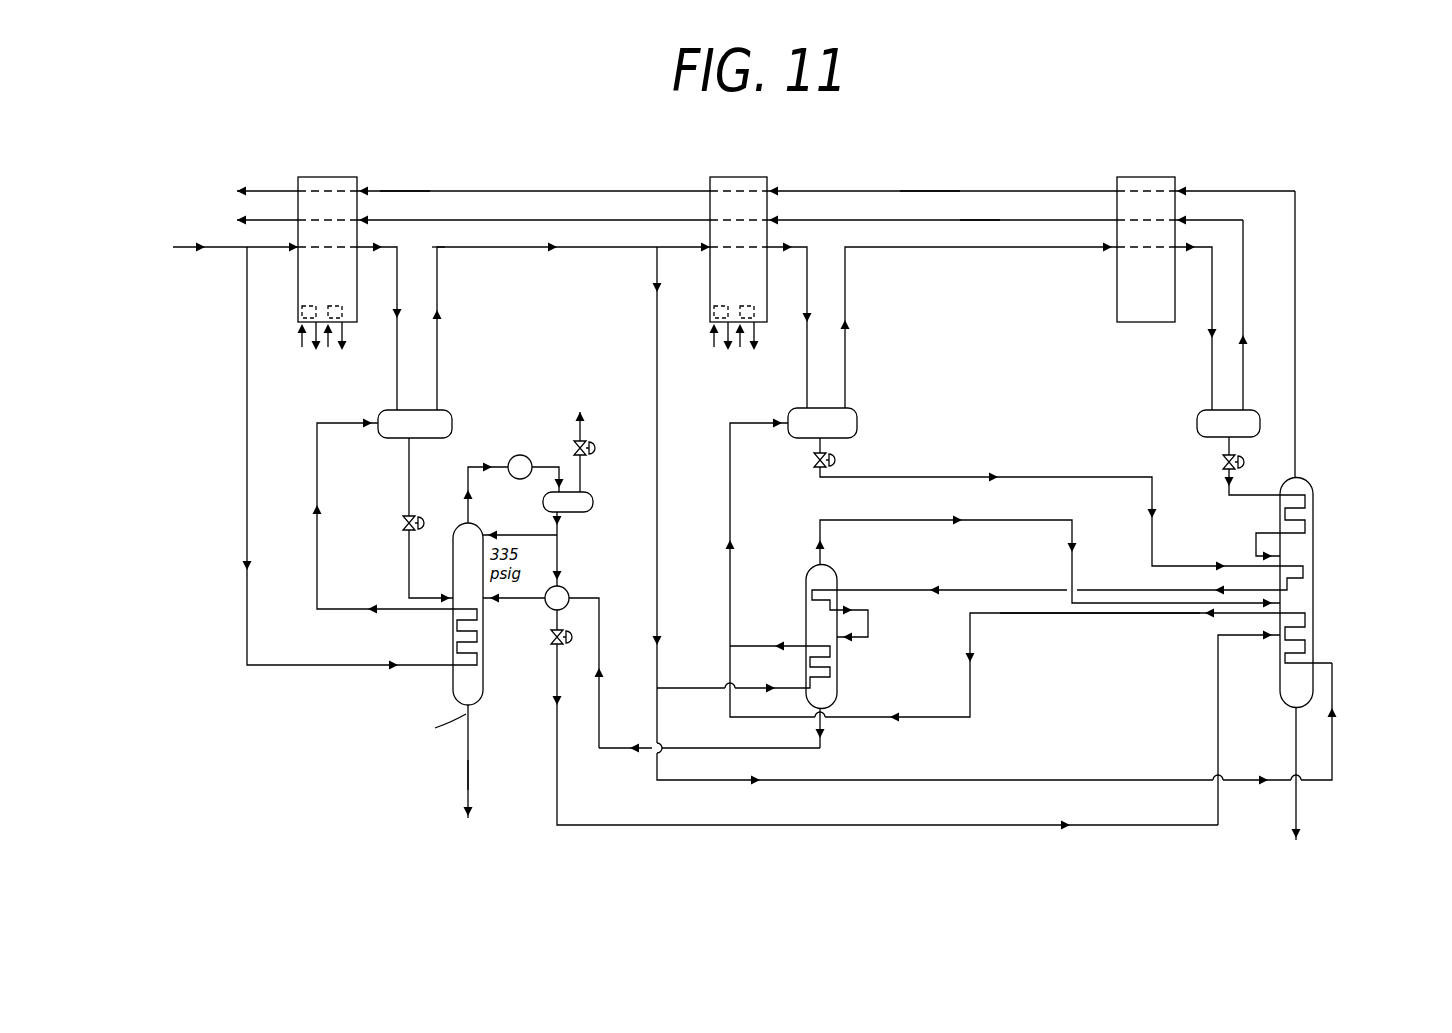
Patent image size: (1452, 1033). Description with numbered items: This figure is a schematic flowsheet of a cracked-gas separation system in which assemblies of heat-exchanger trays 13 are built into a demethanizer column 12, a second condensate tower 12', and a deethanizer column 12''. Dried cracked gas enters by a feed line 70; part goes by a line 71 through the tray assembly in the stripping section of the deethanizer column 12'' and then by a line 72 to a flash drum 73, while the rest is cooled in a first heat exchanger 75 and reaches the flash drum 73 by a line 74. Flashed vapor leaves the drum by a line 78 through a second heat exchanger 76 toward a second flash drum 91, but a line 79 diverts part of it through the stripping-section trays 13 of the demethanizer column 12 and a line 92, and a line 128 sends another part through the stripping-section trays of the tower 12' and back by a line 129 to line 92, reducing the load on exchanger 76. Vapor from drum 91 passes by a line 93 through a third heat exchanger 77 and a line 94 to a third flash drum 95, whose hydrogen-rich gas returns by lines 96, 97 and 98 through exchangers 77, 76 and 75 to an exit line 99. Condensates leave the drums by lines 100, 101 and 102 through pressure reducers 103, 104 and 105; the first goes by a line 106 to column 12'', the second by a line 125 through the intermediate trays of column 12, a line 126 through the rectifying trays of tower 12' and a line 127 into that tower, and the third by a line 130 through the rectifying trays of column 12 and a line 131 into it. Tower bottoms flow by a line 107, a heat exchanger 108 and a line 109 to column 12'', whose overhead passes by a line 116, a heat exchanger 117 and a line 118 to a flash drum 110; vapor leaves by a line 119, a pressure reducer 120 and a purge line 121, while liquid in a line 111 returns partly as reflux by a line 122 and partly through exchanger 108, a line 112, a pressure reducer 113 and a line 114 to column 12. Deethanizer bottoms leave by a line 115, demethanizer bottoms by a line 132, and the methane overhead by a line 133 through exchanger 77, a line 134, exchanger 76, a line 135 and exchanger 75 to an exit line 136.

The demethanizer column 12 is at (1322, 673).
The second condensate tower 12' is at (848, 643).
The deethanizer column 12'' is at (376, 663).
The heat-exchanger trays 13 is at (456, 630).
The feed line 70 is at (190, 252).
The line 71 is at (247, 459).
The line 72 is at (372, 590).
The flash drum 73 is at (381, 412).
The line 74 is at (397, 300).
The first heat exchanger 75 is at (320, 180).
The second heat exchanger 76 is at (724, 178).
The third heat exchanger 77 is at (1133, 178).
The line 78 is at (437, 340).
The line 79 is at (657, 338).
The second flash drum 91 is at (790, 414).
The line 92 is at (1040, 623).
The line 93 is at (1013, 248).
The line 94 is at (1212, 358).
The third flash drum 95 is at (1248, 410).
The line 96 is at (1243, 278).
The line 97 is at (988, 226).
The line 98 is at (436, 231).
The line 99 is at (262, 218).
The line 100 is at (408, 458).
The line 101 is at (815, 447).
The line 102 is at (1227, 441).
The pressure reducer 103 is at (402, 522).
The pressure reducer 104 is at (840, 464).
The pressure reducer 105 is at (1220, 466).
The line 106 is at (409, 553).
The line 107 is at (600, 708).
The heat exchanger 108 is at (569, 585).
The line 109 is at (523, 605).
The flash drum 110 is at (610, 495).
The line 111 is at (562, 535).
The line 112 is at (552, 612).
The pressure reducer 113 is at (570, 637).
The line 114 is at (557, 741).
The line 115 is at (466, 773).
The line 116 is at (472, 498).
The heat exchanger 117 is at (519, 455).
The line 118 is at (541, 464).
The line 119 is at (585, 470).
The pressure reducer 120 is at (593, 450).
The purge line 121 is at (585, 428).
The line 122 is at (503, 533).
The line 125 is at (960, 477).
The line 126 is at (1018, 571).
The line 127 is at (858, 612).
The line 128 is at (702, 686).
The line 129 is at (745, 646).
The line 130 is at (1243, 496).
The line 131 is at (1262, 535).
The line 132 is at (1296, 738).
The line 133 is at (1297, 284).
The line 134 is at (917, 190).
The line 135 is at (415, 190).
The exit line 136 is at (268, 188).